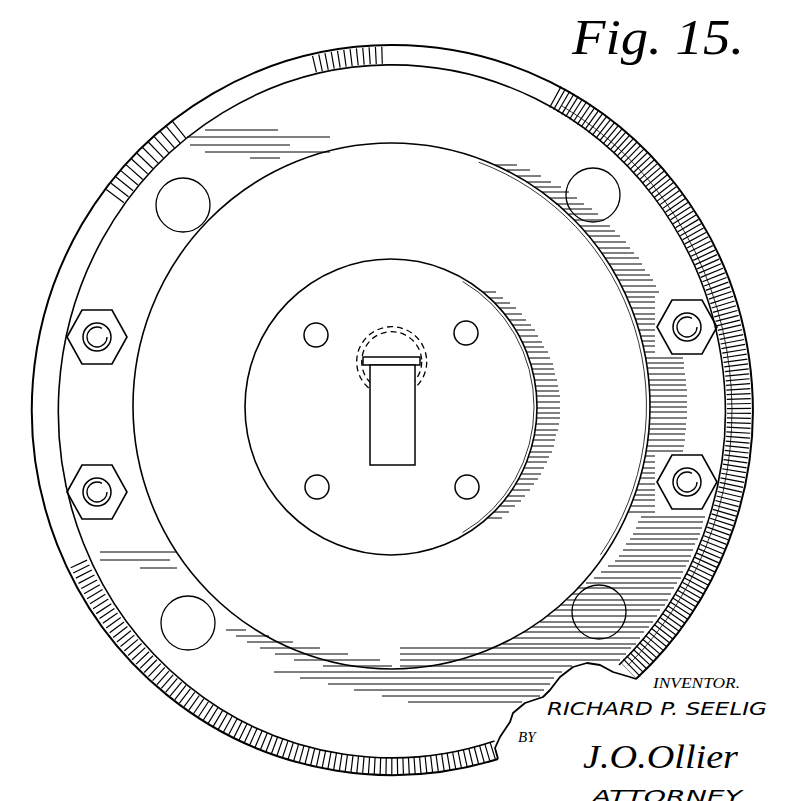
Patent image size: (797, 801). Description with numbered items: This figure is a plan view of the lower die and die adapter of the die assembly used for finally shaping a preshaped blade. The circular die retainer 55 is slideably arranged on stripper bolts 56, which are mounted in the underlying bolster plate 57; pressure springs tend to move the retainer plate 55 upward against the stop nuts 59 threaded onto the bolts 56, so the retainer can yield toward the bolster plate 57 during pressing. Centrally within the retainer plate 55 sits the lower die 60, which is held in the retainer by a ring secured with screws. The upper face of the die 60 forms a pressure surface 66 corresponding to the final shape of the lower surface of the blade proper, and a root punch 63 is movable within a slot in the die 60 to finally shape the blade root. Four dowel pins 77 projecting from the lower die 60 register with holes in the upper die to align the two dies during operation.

The die retainer 55 is at (598, 292).
The stripper bolts 56 is at (97, 338).
The bolster plate 57 is at (162, 683).
The stop nuts 59 is at (85, 318).
The lower die 60 is at (515, 388).
The punch 63 is at (400, 358).
The pressure surface 66 is at (402, 445).
The dowel pins 77 is at (316, 335).